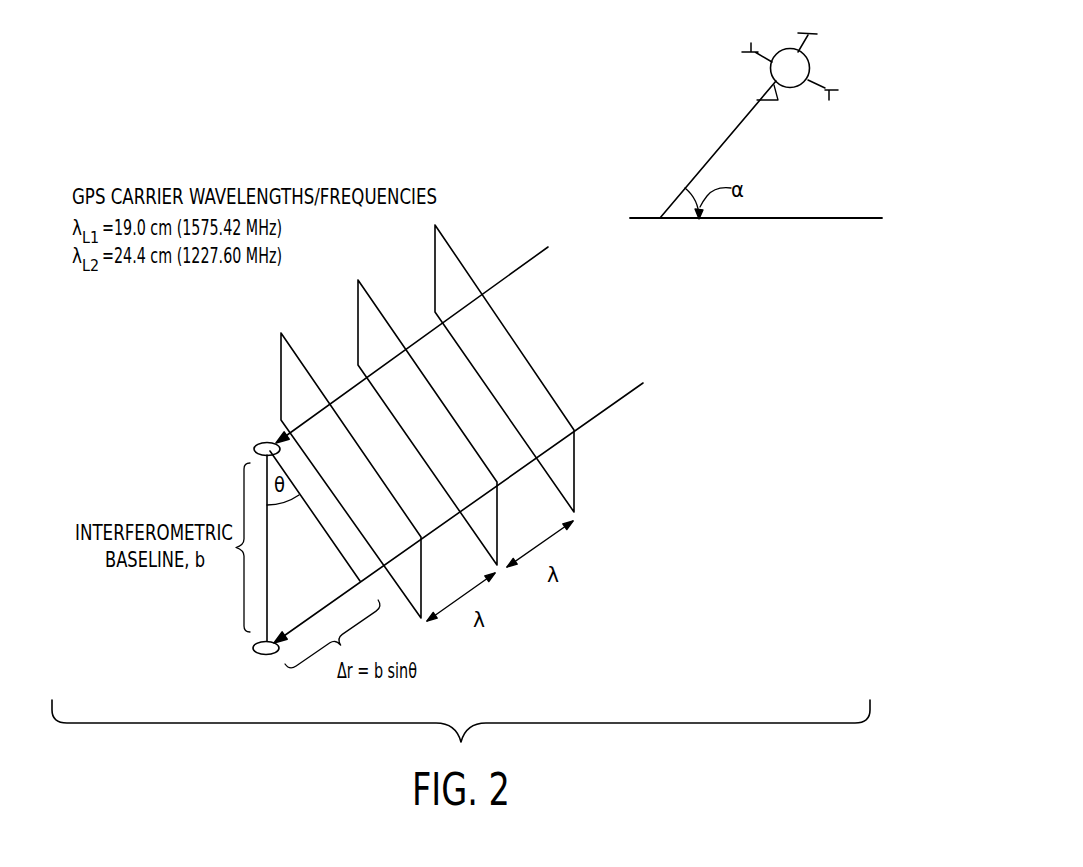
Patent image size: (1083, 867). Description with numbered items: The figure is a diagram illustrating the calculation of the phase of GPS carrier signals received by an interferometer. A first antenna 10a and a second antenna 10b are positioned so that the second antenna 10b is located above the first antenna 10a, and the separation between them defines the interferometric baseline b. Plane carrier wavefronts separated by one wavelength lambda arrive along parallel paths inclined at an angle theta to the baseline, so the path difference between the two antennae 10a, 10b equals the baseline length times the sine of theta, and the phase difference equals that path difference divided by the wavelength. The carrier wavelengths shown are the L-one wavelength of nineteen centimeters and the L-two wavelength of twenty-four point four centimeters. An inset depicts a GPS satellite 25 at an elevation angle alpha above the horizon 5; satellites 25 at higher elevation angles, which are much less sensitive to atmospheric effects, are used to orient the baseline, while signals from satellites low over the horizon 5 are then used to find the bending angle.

The horizon 5 is at (656, 217).
The GPS satellite 25 is at (793, 88).
The first antenna 10a is at (233, 644).
The second antenna 10b is at (234, 435).